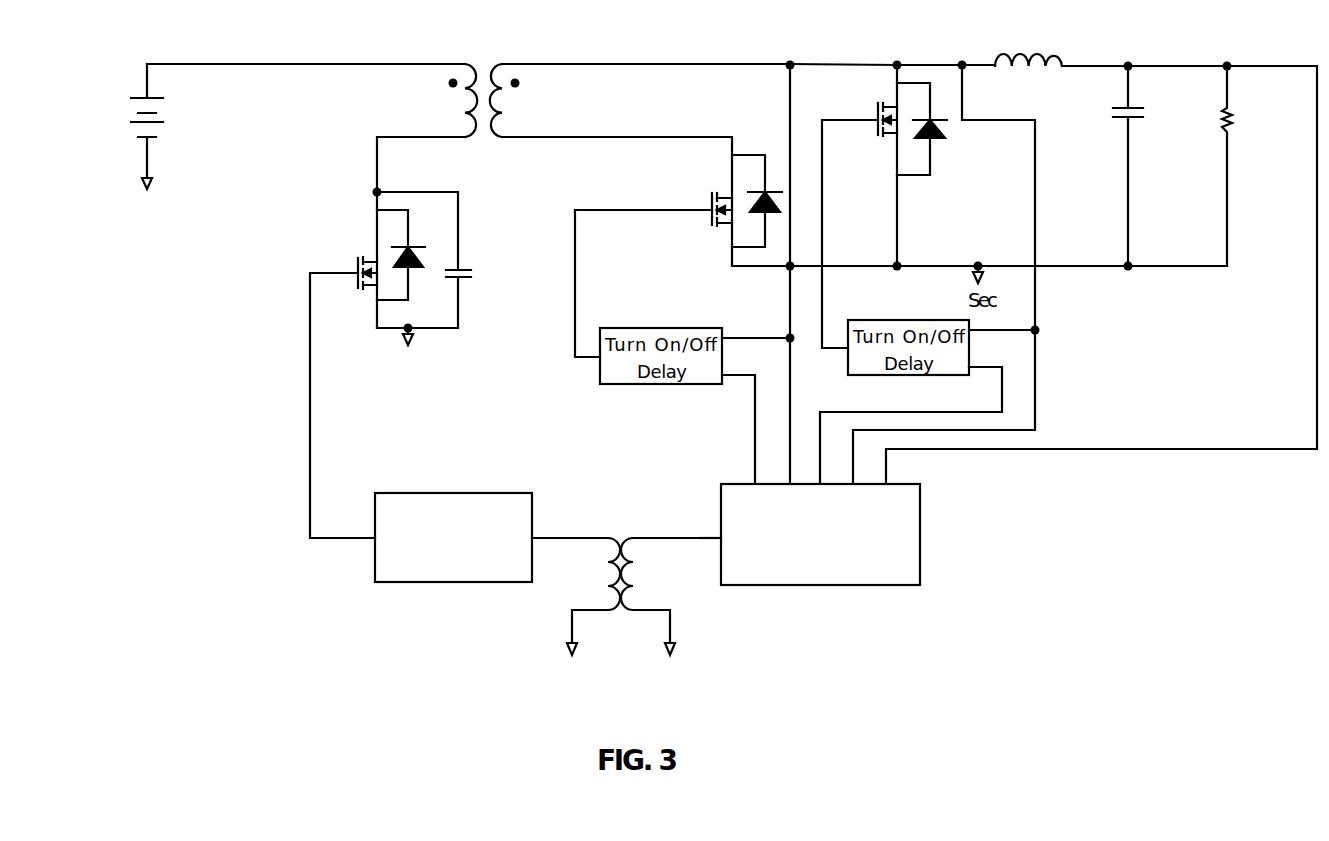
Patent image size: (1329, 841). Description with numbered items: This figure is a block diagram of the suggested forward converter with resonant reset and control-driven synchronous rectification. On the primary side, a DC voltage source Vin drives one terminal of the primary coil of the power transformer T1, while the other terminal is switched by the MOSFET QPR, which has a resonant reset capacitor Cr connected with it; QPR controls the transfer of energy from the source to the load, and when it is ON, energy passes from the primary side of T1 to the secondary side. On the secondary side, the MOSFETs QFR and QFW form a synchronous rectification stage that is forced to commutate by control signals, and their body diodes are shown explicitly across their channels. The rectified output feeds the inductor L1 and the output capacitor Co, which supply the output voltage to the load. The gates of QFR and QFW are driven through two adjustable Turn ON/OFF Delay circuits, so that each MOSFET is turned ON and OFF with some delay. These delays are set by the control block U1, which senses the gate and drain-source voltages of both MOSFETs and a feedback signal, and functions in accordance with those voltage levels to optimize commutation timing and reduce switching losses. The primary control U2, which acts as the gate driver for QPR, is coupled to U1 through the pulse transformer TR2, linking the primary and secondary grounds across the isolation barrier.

The DC voltage source Vin is at (155, 127).
The power transformer T1 is at (554, 181).
The primary MOSFET QPR is at (384, 363).
The resonant reset capacitor Cr is at (437, 260).
The forward rectifier MOSFET QFR is at (678, 256).
The freewheeling MOSFET QFW is at (884, 206).
The inductor L1 is at (1028, 44).
The output capacitor Co is at (1141, 166).
The control block U1 is at (810, 551).
The gate driver U2 is at (491, 551).
The pulse transformer TR2 is at (628, 593).